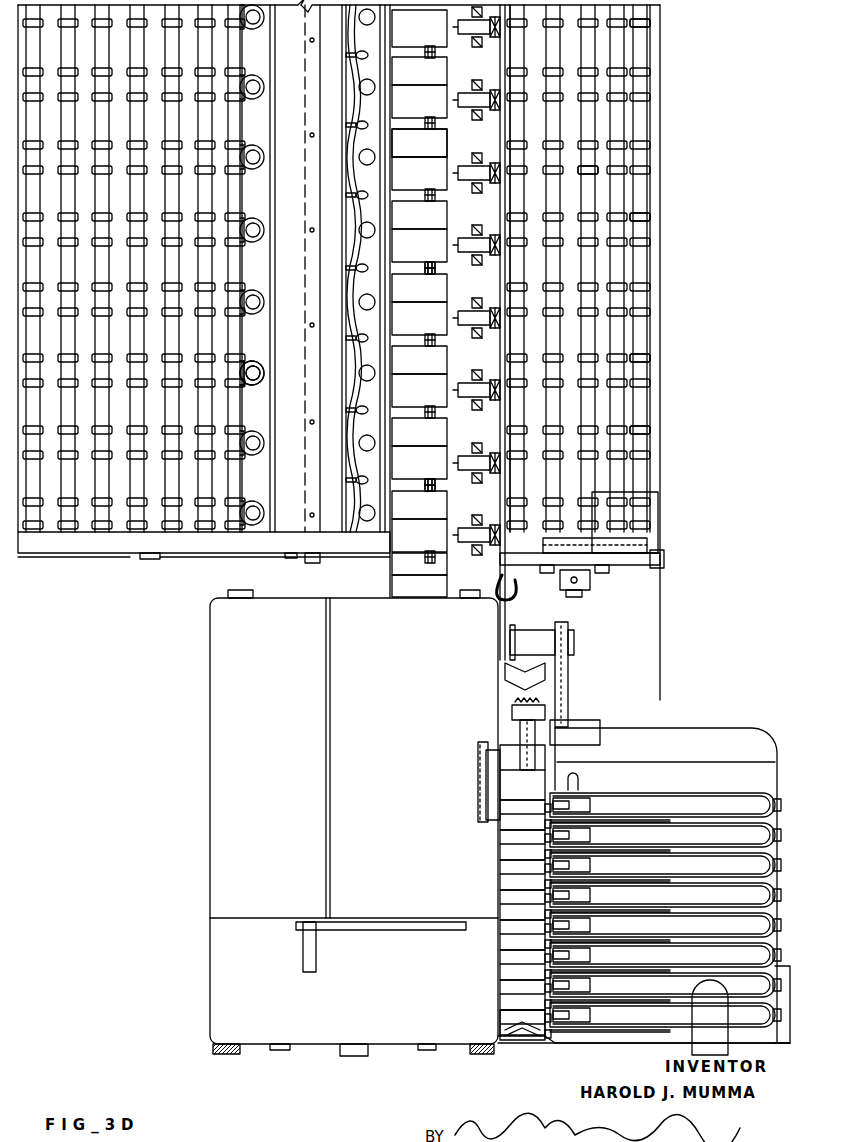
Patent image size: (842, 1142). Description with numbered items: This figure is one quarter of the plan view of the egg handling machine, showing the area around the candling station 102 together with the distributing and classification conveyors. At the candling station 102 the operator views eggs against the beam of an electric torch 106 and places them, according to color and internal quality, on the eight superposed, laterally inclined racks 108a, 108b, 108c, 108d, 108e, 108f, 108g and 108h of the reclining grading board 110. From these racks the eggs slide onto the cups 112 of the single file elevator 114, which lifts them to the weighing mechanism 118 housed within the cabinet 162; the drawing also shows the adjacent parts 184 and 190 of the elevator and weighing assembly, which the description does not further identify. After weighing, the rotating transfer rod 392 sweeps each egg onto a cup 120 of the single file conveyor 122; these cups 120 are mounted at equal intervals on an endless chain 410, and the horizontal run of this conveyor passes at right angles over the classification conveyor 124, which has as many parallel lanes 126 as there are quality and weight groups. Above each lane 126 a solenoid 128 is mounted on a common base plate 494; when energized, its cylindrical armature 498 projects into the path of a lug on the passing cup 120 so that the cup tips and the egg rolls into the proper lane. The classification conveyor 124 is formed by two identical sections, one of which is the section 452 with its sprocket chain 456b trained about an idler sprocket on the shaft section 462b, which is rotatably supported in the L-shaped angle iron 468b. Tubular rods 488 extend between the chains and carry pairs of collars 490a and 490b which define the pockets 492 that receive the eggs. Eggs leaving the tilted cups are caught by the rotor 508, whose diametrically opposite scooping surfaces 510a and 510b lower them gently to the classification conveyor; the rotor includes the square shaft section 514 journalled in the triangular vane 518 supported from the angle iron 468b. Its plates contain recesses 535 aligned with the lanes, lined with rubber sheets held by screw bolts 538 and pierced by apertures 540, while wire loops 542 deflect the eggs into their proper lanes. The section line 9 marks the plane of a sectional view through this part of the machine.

The section line 9- 9 is at (755, 483).
The candling station 102 is at (580, 1025).
The electric torch 106 is at (705, 1050).
The rack or shelf 108a is at (608, 1032).
The rack or shelf 108b is at (610, 1000).
The rack or shelf 108c is at (722, 968).
The rack or shelf 108d is at (722, 938).
The rack or shelf 108e is at (722, 908).
The rack or shelf 108f is at (722, 878).
The rack or shelf 108g is at (725, 848).
The rack or shelf 108h is at (696, 798).
The grading board 110 is at (735, 775).
The cup 112 is at (518, 802).
The single file elevator 114 is at (515, 990).
The weighing mechanism 118 is at (476, 790).
The cup 120 is at (416, 155).
The single file conveyor 122 is at (421, 609).
The classification conveyor 124 is at (660, 270).
The classification lane 126 is at (640, 23).
The solenoid 128 is at (465, 95).
The cabinet 162 is at (236, 858).
The lift column 184 is at (518, 730).
The chain 190 is at (570, 722).
The transfer rod 392 is at (480, 809).
The endless chain 410 is at (437, 268).
The classification conveyor section 452 is at (656, 207).
The sprocket chain 456b is at (660, 545).
The shaft section 462b is at (575, 592).
The L-shaped angle iron 468b is at (625, 562).
The tubular rod 488 is at (588, 162).
The collar 490a is at (640, 352).
The collar 490b is at (650, 425).
The pocket 492 is at (83, 218).
The base plate 494 is at (487, 143).
The cylindrical armature 498 is at (438, 485).
The rotor 508 is at (288, 523).
The scooping surface 510a is at (370, 386).
The scooping surface 510b is at (232, 486).
The shaft section 514 is at (315, 563).
The triangular vane 518 is at (145, 562).
The recess 535 is at (352, 330).
The screw bolt 538 is at (352, 198).
The aperture 540 is at (360, 310).
The wire loop 542 is at (355, 208).